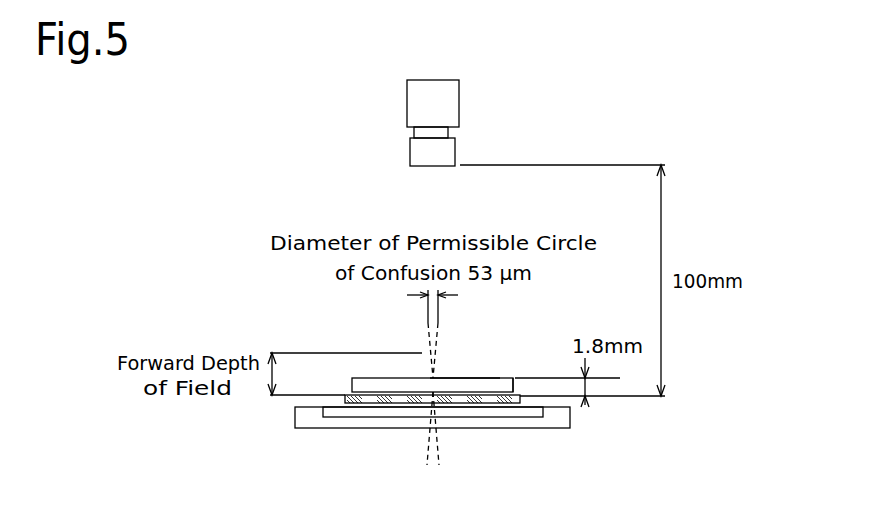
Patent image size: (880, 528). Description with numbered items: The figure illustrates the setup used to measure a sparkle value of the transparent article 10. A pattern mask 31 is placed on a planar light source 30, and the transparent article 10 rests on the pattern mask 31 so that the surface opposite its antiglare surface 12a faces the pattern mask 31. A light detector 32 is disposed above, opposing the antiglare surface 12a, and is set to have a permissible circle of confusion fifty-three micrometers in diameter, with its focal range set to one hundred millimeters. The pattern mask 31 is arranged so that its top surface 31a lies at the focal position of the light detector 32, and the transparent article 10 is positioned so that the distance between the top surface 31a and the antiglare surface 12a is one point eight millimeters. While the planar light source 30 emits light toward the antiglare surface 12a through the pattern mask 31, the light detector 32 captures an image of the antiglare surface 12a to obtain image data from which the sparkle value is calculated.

The light detector 32 is at (460, 103).
The transparent article 10 is at (352, 385).
The antiglare surface 12a is at (472, 378).
The top surface 31a is at (512, 380).
The pattern mask 31 is at (355, 404).
The planar light source 30 is at (527, 429).